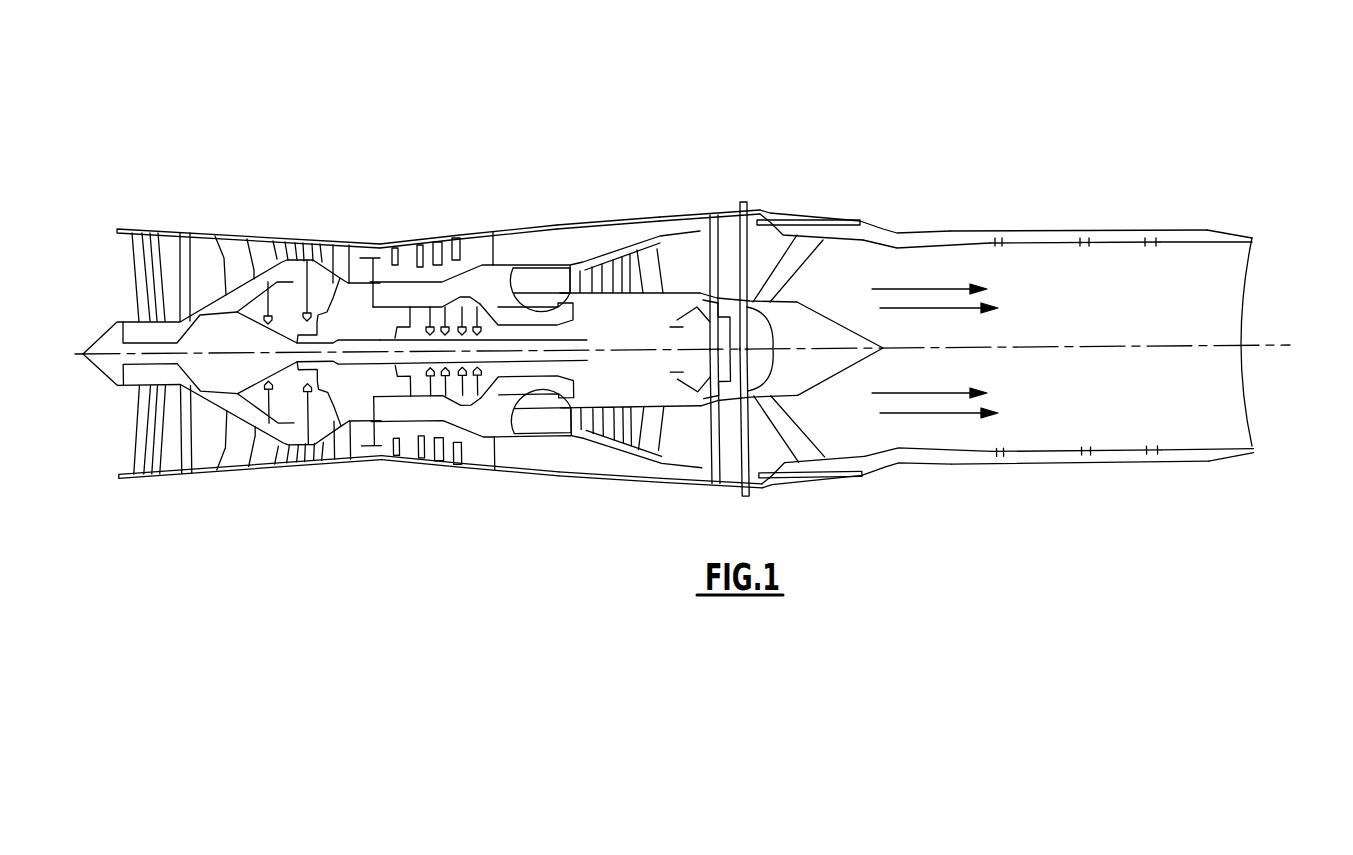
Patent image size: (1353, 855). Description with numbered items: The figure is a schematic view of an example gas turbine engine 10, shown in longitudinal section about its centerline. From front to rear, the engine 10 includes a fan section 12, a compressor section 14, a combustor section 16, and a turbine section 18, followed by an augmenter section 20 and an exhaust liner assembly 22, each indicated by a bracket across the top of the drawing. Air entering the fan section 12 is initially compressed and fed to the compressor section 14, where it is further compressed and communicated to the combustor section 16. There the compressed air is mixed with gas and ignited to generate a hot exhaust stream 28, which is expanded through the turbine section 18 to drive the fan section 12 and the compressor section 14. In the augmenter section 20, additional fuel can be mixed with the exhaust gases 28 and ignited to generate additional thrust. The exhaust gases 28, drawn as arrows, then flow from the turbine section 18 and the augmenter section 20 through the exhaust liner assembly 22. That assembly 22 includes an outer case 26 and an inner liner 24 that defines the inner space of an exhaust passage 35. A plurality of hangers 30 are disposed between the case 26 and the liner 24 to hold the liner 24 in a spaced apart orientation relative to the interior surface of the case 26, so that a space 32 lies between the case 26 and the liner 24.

The gas turbine engine 10 is at (868, 103).
The fan section 12 is at (338, 158).
The compressor section 14 is at (510, 158).
The combustor section 16 is at (598, 158).
The turbine section 18 is at (765, 158).
The augmenter section 20 is at (828, 158).
The exhaust liner assembly 22 is at (828, 158).
The inner liner 24 is at (1060, 248).
The outer case 26 is at (965, 228).
The hot exhaust stream 28 is at (947, 424).
The hangers 30 is at (1153, 242).
The space 32 is at (1188, 244).
The exhaust passage 35 is at (885, 275).